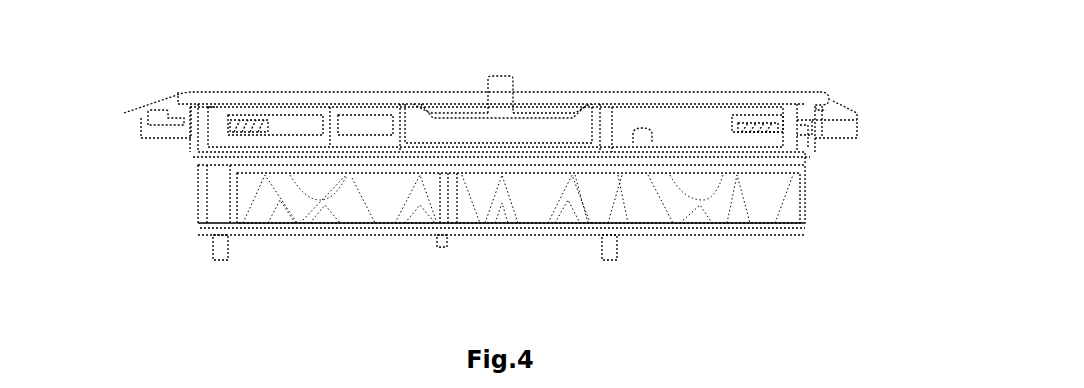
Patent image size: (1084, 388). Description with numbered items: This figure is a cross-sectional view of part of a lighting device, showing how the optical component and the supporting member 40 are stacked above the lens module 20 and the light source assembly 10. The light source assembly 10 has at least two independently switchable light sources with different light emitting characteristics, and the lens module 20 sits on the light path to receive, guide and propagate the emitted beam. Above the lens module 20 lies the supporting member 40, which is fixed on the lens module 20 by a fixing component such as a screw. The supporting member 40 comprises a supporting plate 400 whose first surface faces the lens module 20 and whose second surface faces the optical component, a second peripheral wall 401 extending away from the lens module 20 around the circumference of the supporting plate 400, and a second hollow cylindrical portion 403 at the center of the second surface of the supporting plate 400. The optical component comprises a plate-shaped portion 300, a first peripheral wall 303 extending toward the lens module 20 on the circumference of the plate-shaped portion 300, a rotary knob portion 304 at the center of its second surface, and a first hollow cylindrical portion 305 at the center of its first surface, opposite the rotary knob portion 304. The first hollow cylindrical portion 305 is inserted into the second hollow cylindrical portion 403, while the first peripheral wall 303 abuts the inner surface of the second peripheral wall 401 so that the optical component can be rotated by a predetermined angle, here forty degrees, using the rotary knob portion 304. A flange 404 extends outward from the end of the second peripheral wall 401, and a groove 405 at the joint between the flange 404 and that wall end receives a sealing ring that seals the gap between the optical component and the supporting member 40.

The light source assembly 10 is at (755, 227).
The lens module 20 is at (770, 202).
The supporting member 40 is at (866, 109).
The plate-shaped portion 300 is at (633, 102).
The first peripheral wall 303 is at (203, 135).
The rotary knob portion 304 is at (502, 93).
The first hollow cylindrical portion 305 is at (405, 108).
The supporting plate 400 is at (221, 157).
The second peripheral wall 401 is at (807, 137).
The second hollow cylindrical portion 403 is at (605, 138).
The flange 404 is at (150, 110).
The groove 405 is at (822, 110).